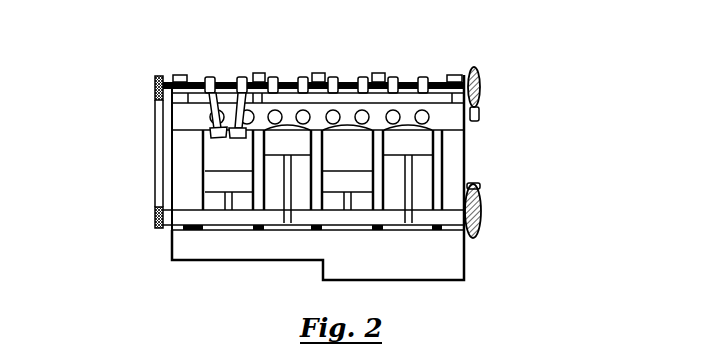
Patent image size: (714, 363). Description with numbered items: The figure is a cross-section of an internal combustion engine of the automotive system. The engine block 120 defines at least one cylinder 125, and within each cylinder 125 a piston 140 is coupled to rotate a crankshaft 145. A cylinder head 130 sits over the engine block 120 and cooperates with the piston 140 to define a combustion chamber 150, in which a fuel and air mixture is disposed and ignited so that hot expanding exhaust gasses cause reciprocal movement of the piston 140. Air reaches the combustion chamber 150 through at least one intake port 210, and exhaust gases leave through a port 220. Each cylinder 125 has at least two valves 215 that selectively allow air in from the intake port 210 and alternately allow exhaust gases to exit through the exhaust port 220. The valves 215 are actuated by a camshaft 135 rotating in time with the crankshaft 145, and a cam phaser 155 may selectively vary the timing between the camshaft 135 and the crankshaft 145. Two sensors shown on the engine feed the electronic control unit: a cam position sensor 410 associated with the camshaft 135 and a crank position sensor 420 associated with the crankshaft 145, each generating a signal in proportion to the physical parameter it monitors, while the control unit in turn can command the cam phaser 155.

The engine block 120 is at (160, 170).
The cylinder 125 is at (375, 93).
The cylinder head 130 is at (154, 128).
The camshaft 135 is at (224, 78).
The piston 140 is at (348, 182).
The crankshaft 145 is at (197, 220).
The combustion chamber 150 is at (408, 132).
The cam phaser 155 is at (153, 81).
The intake port 210 is at (323, 153).
The valves 215 is at (232, 133).
The exhaust port 220 is at (290, 88).
The cam position sensor 410 is at (481, 118).
The crank position sensor 420 is at (474, 187).